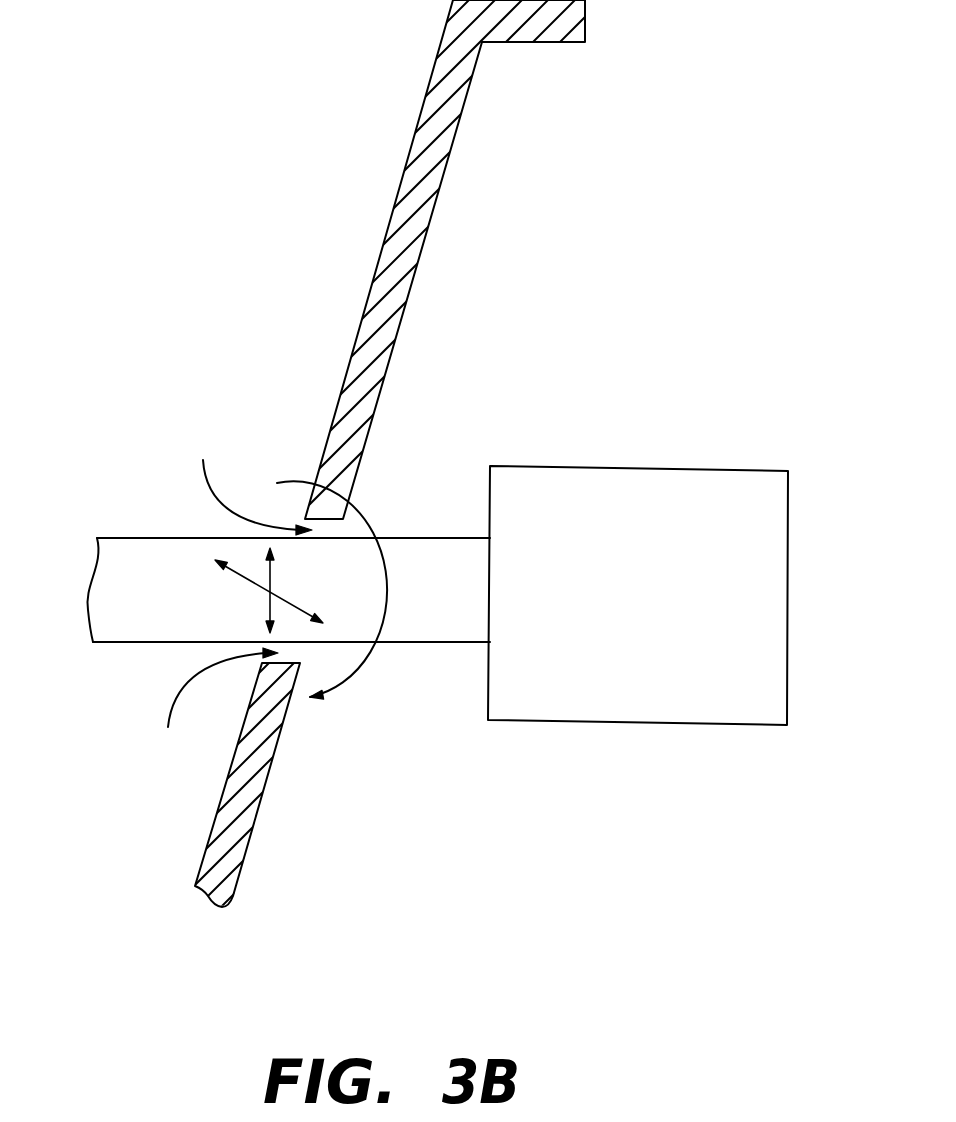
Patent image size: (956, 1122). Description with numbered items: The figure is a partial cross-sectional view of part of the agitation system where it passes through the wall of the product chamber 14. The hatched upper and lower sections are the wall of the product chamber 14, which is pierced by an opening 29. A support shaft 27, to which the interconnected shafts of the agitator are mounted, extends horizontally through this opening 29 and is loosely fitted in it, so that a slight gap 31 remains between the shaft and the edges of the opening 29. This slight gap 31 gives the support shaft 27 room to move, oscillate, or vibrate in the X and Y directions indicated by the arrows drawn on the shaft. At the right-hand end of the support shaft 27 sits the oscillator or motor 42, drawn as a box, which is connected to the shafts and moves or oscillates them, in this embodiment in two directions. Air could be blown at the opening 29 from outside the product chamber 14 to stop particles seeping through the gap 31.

The product chamber 14 is at (405, 288).
The support shaft 27 is at (145, 553).
The slight gap 31 is at (249, 476).
The opening 29 is at (211, 711).
The oscillator or motor 42 is at (656, 608).